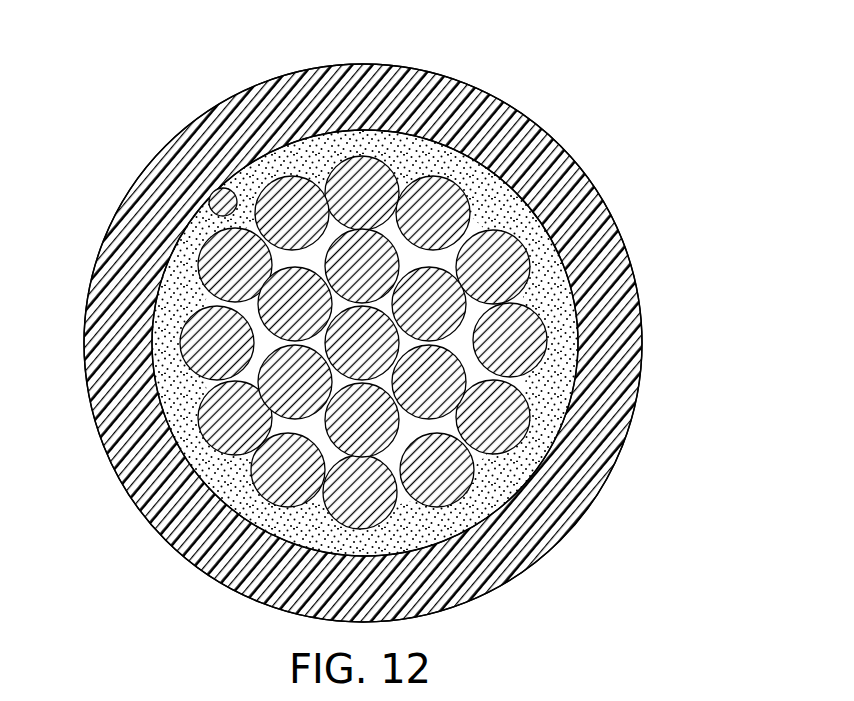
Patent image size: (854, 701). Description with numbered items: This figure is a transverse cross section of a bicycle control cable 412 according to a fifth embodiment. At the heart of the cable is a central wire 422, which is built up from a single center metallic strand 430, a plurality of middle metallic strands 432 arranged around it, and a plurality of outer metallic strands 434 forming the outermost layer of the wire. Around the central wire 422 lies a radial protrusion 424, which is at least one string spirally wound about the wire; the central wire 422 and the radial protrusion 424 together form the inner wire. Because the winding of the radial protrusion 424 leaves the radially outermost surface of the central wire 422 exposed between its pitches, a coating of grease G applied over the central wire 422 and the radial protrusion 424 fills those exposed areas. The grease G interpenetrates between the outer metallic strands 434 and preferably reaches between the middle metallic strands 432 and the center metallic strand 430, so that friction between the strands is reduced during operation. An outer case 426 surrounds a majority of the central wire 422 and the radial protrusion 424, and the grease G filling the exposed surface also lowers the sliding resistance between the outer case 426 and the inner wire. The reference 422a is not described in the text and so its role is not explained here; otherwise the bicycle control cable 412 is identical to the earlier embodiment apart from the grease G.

The bicycle control cable 412 is at (578, 100).
The central wire 422 is at (545, 390).
The outer surface of separator layer 422a is at (528, 244).
The grease G is at (538, 290).
The radial protrusion 424 is at (224, 198).
The outer case 426 is at (577, 535).
The center metallic strand 430 is at (352, 330).
The middle metallic strands 432 is at (290, 302).
The outer metallic strands 434 is at (212, 503).